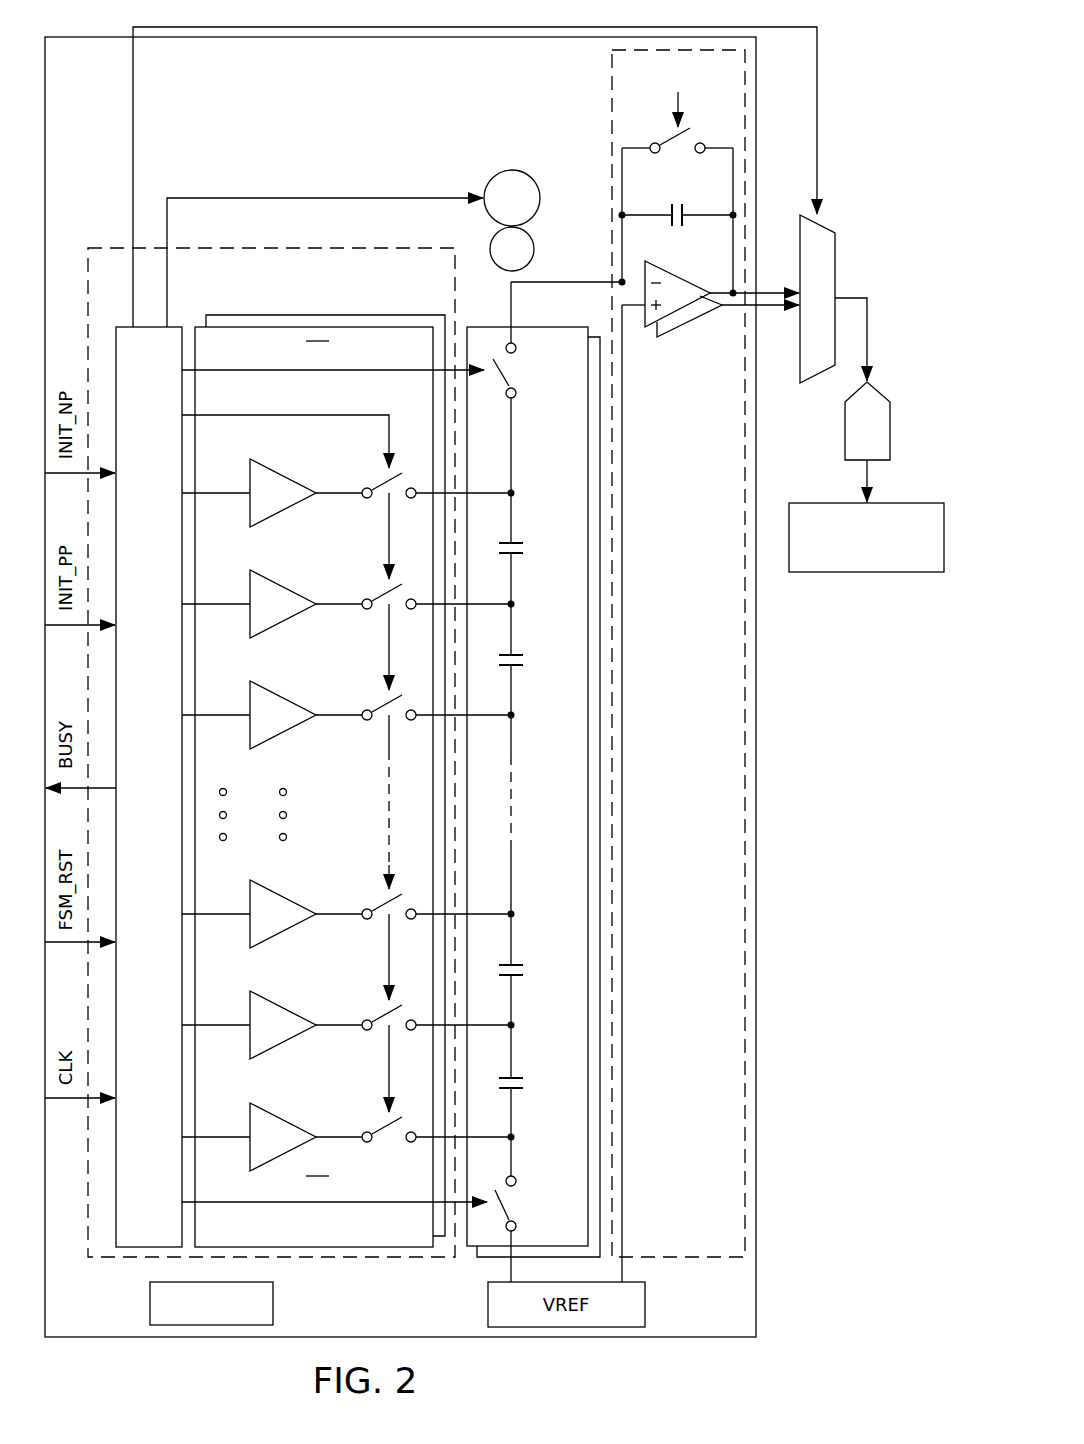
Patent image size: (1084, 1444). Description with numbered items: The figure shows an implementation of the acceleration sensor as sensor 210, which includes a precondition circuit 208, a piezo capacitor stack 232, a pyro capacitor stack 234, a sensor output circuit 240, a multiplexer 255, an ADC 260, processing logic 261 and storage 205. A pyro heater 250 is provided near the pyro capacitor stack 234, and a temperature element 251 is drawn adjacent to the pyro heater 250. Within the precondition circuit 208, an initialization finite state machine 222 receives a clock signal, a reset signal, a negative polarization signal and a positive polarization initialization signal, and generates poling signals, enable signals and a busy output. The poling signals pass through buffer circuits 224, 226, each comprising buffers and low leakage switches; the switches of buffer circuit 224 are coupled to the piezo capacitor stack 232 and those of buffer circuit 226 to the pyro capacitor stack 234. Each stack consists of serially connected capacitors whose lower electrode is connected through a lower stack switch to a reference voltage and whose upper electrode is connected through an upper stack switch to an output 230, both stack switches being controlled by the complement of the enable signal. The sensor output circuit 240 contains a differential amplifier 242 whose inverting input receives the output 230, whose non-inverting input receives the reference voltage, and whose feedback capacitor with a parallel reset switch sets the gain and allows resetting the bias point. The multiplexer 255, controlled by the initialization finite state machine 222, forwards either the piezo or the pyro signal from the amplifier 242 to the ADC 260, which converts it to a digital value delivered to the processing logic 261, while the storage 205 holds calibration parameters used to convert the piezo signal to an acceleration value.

The storage 205 is at (150, 1300).
The precondition circuit 208 is at (121, 245).
The sensor 210 is at (308, 159).
The initialization finite state machine 222 is at (130, 833).
The buffer circuit 224 is at (293, 314).
The buffer circuit 226 is at (377, 314).
The output 230 is at (563, 282).
The piezo capacitor stack 232 is at (594, 505).
The pyro capacitor stack 234 is at (600, 957).
The sensor output circuit 240 is at (658, 829).
The differential amplifier 242 is at (688, 280).
The pyro heater 250 is at (488, 181).
The temperature sensor 251 is at (490, 241).
The multiplexer 255 is at (836, 262).
The ADC 260 is at (892, 432).
The processing logic 261 is at (877, 573).